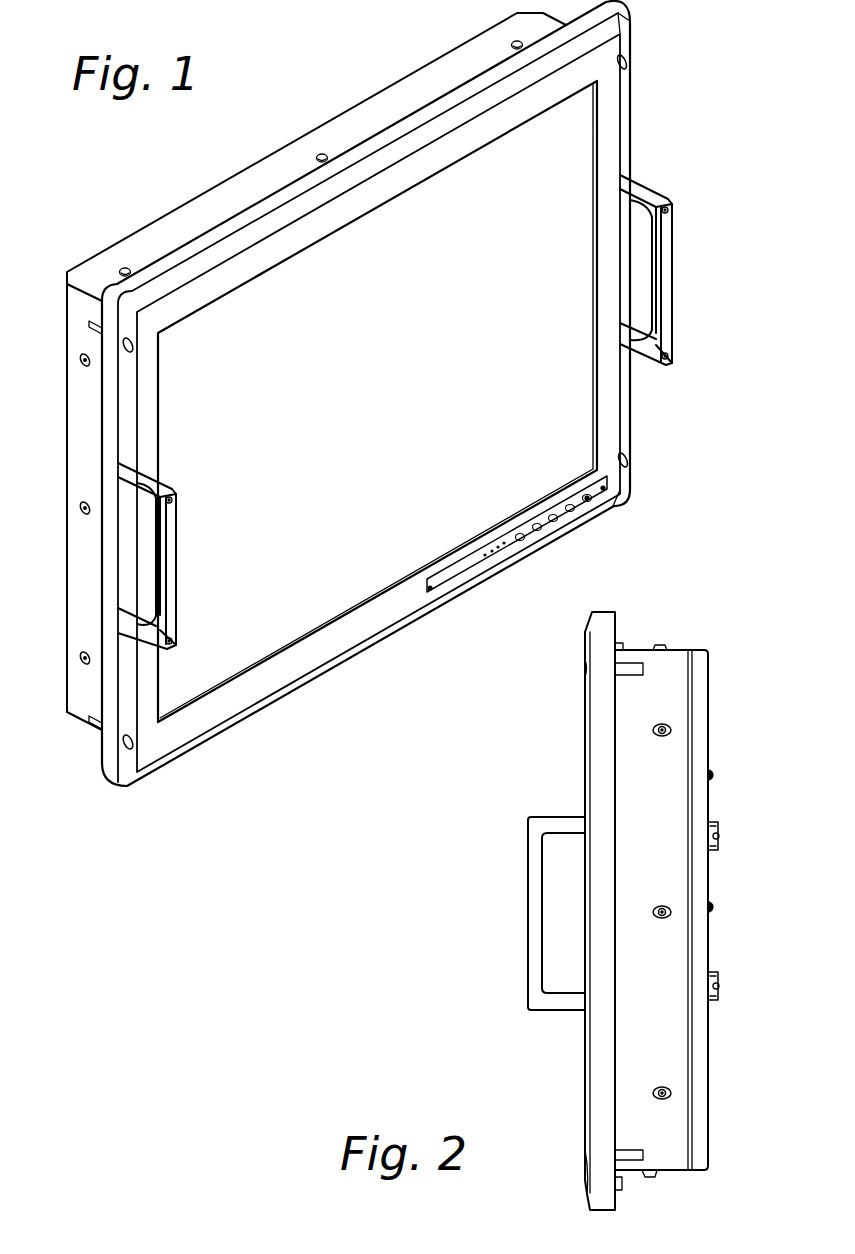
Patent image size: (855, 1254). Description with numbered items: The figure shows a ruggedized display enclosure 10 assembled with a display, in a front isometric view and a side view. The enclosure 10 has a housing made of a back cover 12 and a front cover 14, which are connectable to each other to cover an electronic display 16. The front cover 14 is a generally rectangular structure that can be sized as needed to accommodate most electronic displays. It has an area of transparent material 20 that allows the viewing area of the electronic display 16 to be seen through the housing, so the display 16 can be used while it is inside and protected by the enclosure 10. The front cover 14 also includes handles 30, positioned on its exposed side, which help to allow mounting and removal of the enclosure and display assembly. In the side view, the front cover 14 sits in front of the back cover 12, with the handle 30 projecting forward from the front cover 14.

In FIG. 1, the ruggedized display enclosure 10 is at (677, 89).
In FIG. 2, the ruggedized display enclosure 10 is at (732, 613).
In FIG. 1, the back cover 12 is at (227, 177).
In FIG. 2, the back cover 12 is at (708, 710).
In FIG. 1, the front cover 14 is at (632, 124).
In FIG. 2, the front cover 14 is at (585, 733).
In FIG. 1, the electronic display 16 is at (273, 615).
In FIG. 1, the area of transparent material 20 is at (570, 403).
In FIG. 1, the handles 30 is at (672, 290).
In FIG. 2, the handles 30 is at (528, 895).